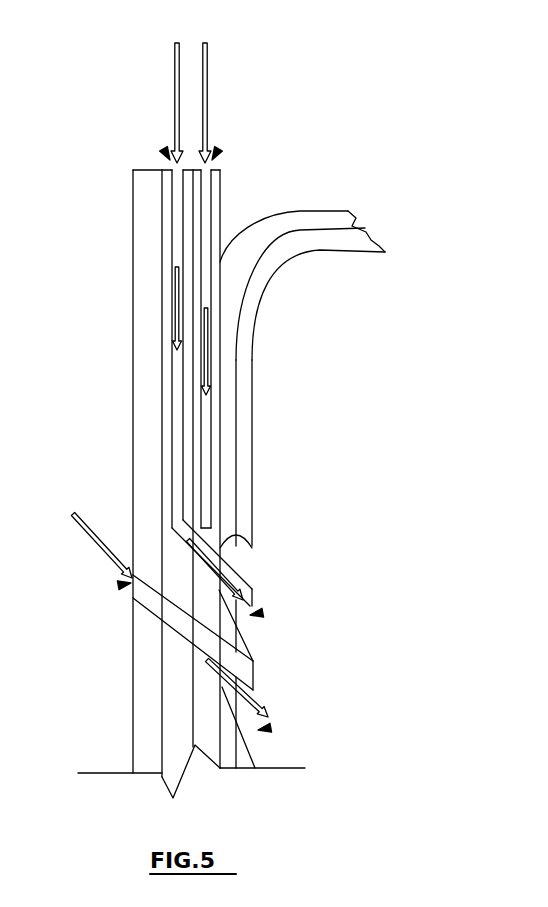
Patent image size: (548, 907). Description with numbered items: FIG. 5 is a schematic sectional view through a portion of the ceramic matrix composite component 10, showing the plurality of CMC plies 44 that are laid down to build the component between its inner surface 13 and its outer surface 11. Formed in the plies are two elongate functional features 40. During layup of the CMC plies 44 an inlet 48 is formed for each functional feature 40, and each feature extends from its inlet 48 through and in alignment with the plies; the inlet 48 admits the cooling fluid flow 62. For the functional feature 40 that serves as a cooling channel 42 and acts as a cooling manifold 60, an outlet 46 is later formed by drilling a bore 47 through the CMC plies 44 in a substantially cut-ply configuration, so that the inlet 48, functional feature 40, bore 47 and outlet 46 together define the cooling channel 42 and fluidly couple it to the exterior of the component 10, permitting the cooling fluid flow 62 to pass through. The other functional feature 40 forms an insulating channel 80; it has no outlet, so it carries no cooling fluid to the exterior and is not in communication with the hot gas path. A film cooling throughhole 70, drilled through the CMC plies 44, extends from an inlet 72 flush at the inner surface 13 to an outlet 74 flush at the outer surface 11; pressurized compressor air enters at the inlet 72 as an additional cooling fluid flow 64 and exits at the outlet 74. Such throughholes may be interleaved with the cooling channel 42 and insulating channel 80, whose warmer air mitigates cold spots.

The ceramic matrix composite component 10 is at (356, 107).
The outer surface 11 is at (250, 462).
The inner surface 13 is at (133, 665).
The functional feature 40 is at (168, 372).
The cooling channel 42 is at (175, 470).
The CMC plies 44 is at (283, 212).
The outlet 46 is at (258, 613).
The bore 47 is at (207, 550).
The inlet 48 is at (167, 154).
The cooling manifold 60 is at (175, 412).
The cooling fluid flow 62 is at (174, 83).
The additional cooling fluid flow 64 is at (70, 516).
The film cooling throughhole 70 is at (160, 620).
The inlet 72 is at (122, 584).
The outlet 74 is at (268, 728).
The insulating channel 80 is at (211, 412).